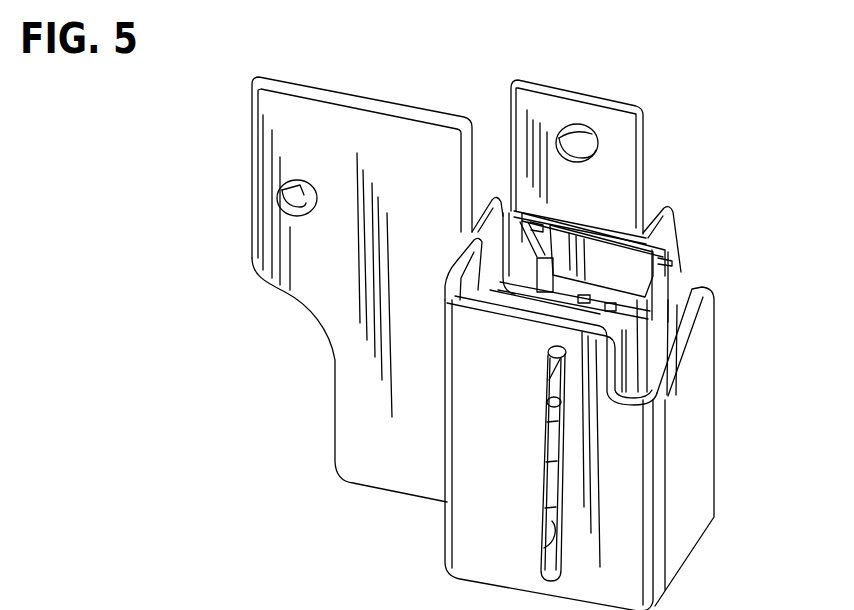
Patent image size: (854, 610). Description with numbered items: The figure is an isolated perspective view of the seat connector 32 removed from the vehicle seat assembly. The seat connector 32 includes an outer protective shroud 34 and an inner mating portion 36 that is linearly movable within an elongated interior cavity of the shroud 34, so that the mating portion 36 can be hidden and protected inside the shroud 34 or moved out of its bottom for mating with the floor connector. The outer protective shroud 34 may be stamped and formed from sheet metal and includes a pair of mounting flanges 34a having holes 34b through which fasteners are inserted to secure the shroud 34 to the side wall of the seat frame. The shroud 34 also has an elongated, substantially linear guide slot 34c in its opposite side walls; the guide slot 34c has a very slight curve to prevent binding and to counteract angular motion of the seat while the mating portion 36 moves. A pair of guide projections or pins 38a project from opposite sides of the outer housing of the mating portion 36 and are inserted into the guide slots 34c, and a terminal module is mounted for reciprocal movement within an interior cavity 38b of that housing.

The seat connector 32 is at (720, 376).
The outer protective shroud 34 is at (693, 504).
The mounting flanges 34a is at (382, 136).
The holes 34b is at (280, 192).
The guide slot 34c is at (545, 556).
The inner mating portion 36 is at (646, 322).
The guide projections or pins 38a is at (549, 379).
The interior cavity 38b is at (415, 604).